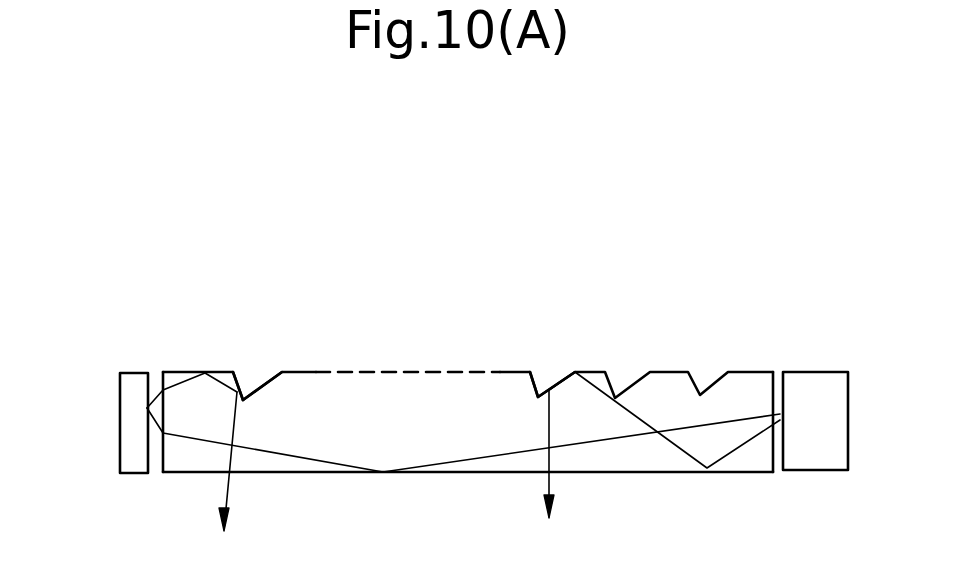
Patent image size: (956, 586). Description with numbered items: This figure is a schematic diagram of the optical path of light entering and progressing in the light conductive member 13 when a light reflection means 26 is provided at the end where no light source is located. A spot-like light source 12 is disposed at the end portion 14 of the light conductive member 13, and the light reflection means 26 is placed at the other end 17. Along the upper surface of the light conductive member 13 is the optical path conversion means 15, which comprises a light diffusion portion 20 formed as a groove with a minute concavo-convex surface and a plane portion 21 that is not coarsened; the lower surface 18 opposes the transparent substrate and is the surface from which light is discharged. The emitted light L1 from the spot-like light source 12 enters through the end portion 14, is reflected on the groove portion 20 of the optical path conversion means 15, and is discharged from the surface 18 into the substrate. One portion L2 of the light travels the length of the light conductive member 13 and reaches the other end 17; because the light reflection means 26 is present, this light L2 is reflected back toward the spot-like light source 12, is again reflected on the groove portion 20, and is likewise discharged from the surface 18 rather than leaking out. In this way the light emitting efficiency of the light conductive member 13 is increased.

The spot-like light source 12 is at (828, 447).
The light conductive member 13 is at (473, 351).
The end portion 14 is at (777, 380).
The optical path conversion means 15 is at (379, 283).
The other end 17 is at (155, 392).
The surface 18 is at (663, 473).
The light diffusion portion 20 is at (265, 378).
The plane portion 21 is at (183, 376).
The light reflection means 26 is at (130, 398).
The emitted light L1 is at (552, 487).
The one portion of the emitted light L2 is at (232, 497).